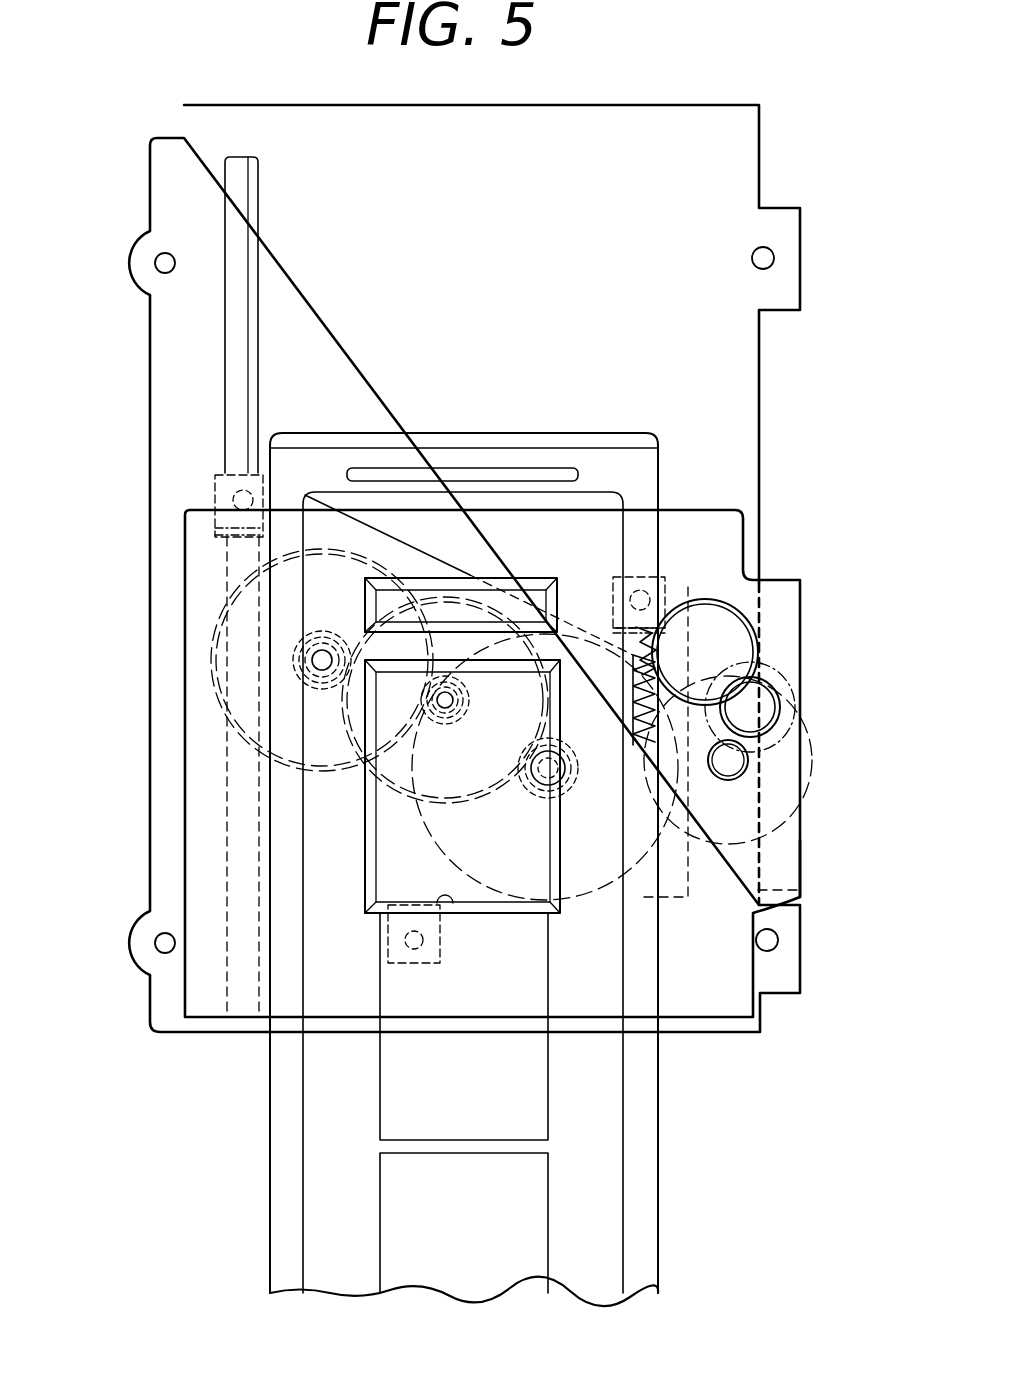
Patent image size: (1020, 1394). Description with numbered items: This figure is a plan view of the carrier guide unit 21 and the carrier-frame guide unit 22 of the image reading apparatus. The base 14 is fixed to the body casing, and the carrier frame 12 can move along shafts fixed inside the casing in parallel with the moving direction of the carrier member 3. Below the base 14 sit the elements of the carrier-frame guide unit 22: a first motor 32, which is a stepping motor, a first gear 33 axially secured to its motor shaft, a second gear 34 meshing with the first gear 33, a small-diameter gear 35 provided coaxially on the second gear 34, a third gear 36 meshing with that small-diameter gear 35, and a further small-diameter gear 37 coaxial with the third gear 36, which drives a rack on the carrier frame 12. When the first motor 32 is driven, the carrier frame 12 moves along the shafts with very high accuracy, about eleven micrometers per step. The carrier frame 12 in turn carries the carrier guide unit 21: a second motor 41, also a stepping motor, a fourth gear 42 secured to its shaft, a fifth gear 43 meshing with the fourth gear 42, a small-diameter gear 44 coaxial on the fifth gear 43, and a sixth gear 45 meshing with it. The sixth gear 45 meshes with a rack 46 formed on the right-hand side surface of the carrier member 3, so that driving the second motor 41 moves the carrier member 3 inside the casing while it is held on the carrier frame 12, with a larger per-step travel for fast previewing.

The carrier member 3 is at (642, 1163).
The carrier frame 12 is at (800, 842).
The base 14 is at (800, 950).
The carrier guide unit 21 is at (838, 556).
The carrier-frame guide unit 22 is at (120, 803).
The first motor 32 is at (688, 850).
The first gear 33 is at (533, 782).
The second gear 34 is at (385, 845).
The small-diameter gear 35 is at (468, 722).
The third gear 36 is at (240, 735).
The small-diameter gear 37 is at (295, 660).
The second motor 41 is at (813, 740).
The fourth gear 42 is at (748, 762).
The fifth gear 43 is at (777, 670).
The small-diameter gear 44 is at (780, 707).
The sixth gear 45 is at (740, 612).
The rack 46 is at (683, 642).